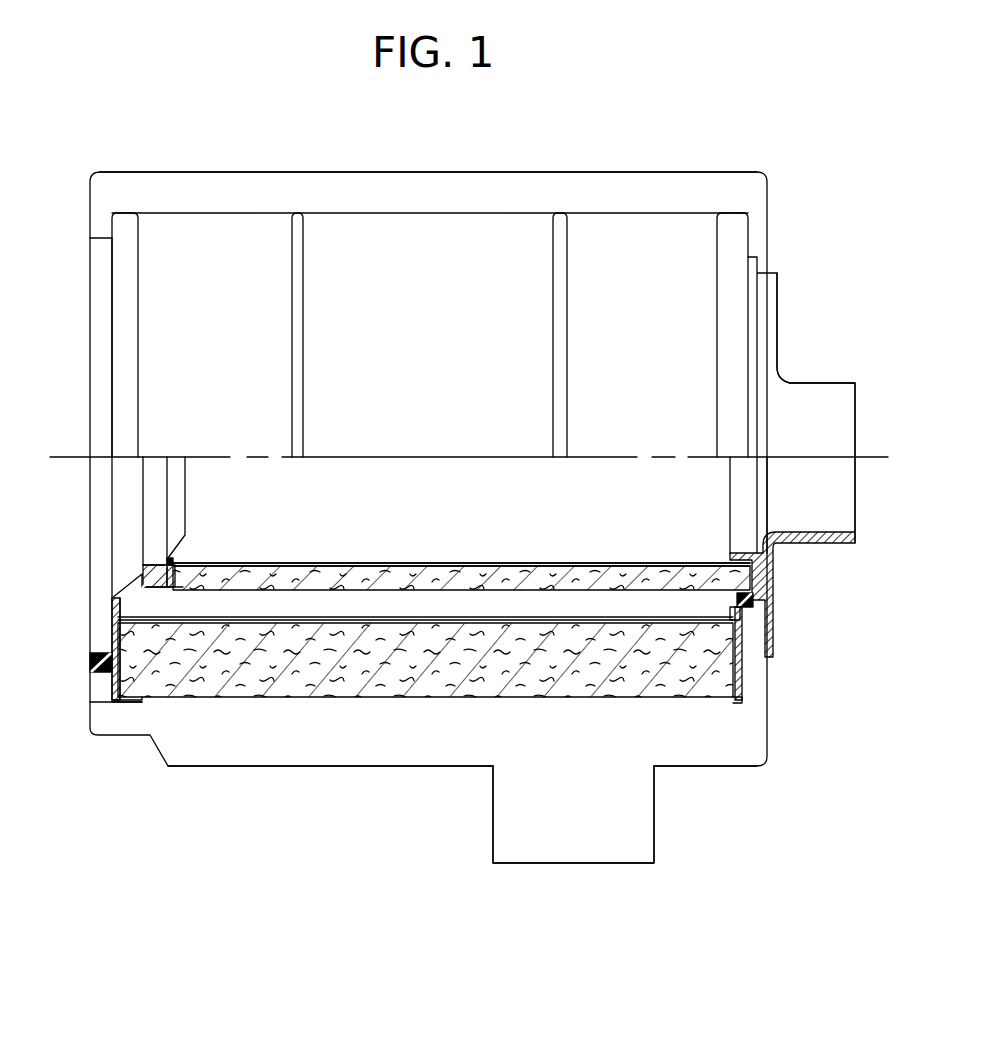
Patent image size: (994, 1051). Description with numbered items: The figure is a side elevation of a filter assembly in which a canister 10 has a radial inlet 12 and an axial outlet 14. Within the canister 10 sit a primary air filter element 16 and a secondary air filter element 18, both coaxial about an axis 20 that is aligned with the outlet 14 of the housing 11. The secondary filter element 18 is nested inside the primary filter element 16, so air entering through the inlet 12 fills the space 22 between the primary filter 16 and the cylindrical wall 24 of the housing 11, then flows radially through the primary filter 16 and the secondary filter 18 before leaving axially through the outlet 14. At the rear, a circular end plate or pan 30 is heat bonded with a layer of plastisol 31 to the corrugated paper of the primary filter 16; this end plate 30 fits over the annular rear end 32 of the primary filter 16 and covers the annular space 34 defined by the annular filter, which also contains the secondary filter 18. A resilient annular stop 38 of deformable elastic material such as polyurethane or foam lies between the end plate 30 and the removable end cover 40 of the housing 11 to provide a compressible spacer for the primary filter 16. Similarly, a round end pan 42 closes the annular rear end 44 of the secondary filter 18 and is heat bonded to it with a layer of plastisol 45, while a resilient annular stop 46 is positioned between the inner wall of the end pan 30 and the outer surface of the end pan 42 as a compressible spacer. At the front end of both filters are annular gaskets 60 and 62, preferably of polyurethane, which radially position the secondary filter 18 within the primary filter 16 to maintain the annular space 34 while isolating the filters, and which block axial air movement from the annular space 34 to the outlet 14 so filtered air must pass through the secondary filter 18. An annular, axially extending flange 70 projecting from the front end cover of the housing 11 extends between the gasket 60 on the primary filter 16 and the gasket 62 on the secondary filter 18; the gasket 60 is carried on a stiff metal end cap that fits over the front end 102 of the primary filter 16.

The canister 10 is at (605, 172).
The housing 11 is at (417, 172).
The radial inlet 12 is at (602, 847).
The axial outlet 14 is at (813, 403).
The primary air filter element 16 is at (390, 687).
The secondary air filter element 18 is at (280, 577).
The axis 20 is at (865, 457).
The space 22 is at (325, 744).
The cylindrical wall 24 is at (440, 765).
The circular end plate or pan 30 is at (130, 588).
The layer of plastisol 31 is at (117, 657).
The annular rear end 32 is at (125, 640).
The annular space 34 is at (415, 602).
The resilient annular stop 38 is at (92, 663).
The removable end cover 40 is at (90, 597).
The round end plate or pan 42 is at (185, 468).
The annular rear or second end 44 is at (173, 570).
The layer of plastisol 45 is at (170, 560).
The resilient annular stop 46 is at (145, 568).
The annular seal or gasket 60 is at (750, 608).
The annular seal or gasket 62 is at (775, 567).
The annular, axially extending flange 70 is at (703, 605).
The front end 102 is at (740, 697).